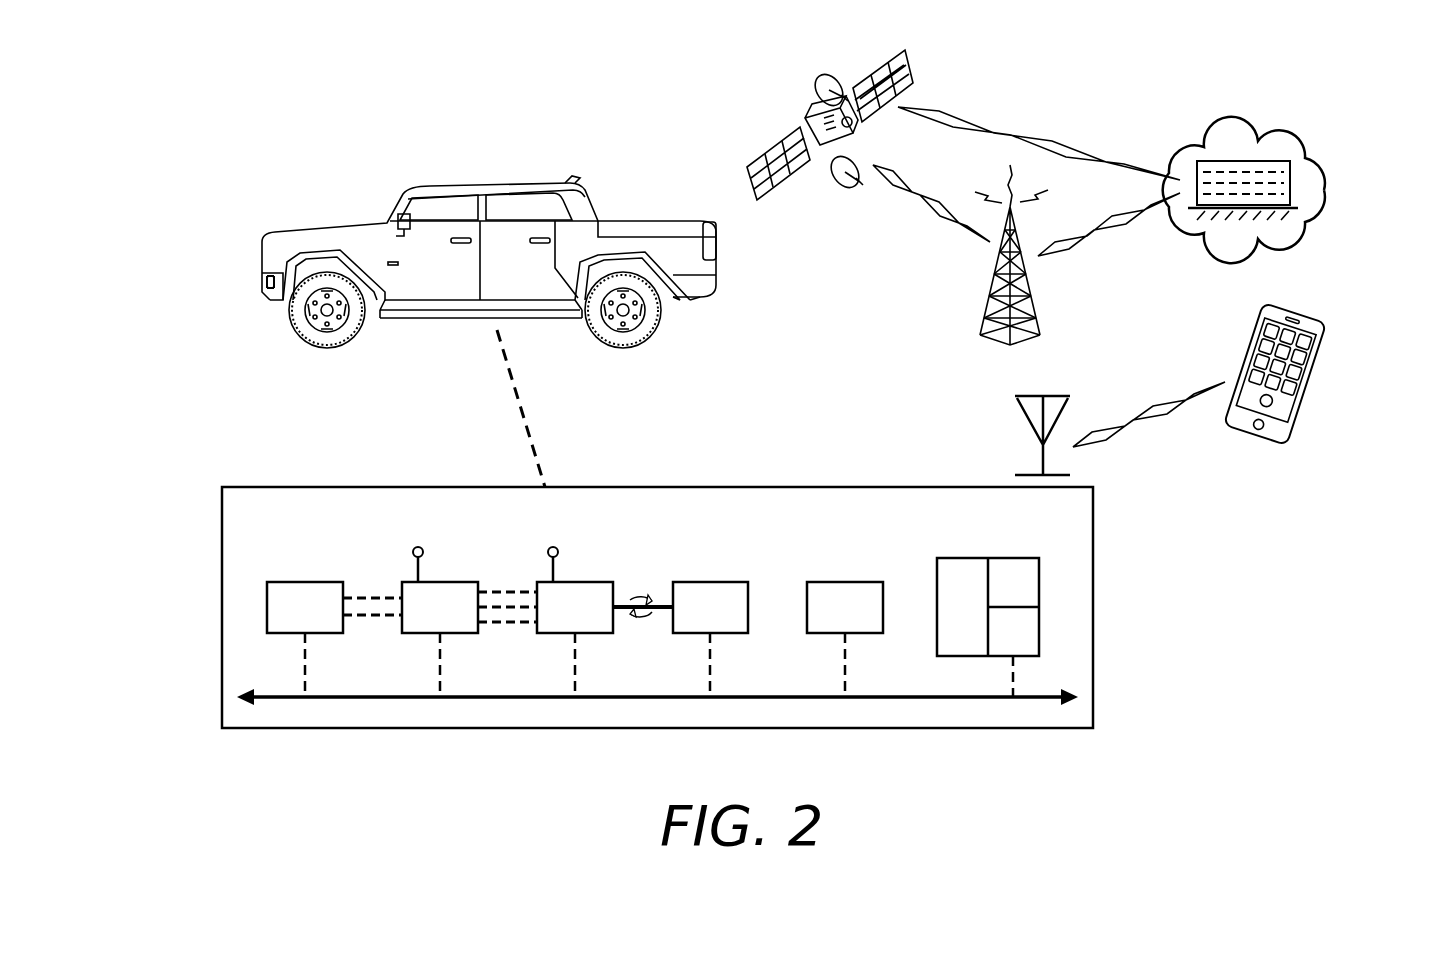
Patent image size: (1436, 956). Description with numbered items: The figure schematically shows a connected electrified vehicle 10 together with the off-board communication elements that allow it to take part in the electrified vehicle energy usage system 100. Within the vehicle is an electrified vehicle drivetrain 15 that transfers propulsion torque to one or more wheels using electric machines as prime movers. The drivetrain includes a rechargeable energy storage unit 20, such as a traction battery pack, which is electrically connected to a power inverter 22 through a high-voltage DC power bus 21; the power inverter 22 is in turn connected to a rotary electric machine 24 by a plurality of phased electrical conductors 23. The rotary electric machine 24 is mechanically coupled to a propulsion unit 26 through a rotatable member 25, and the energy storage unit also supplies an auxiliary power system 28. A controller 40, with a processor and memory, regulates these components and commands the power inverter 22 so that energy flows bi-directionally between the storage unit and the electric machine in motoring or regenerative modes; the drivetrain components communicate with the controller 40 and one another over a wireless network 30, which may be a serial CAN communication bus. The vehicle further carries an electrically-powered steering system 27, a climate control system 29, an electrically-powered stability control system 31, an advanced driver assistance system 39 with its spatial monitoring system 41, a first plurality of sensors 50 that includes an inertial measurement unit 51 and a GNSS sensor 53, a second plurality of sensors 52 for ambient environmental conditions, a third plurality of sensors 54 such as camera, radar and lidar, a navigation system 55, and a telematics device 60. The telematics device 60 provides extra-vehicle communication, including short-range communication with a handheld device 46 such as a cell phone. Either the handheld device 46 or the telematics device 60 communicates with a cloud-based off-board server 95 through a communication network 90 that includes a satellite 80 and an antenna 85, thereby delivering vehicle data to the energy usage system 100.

The electrified vehicle 10 is at (286, 207).
The electrified vehicle drivetrain 15 is at (283, 483).
The rechargeable energy storage unit 20 is at (307, 582).
The high-voltage DC power bus 21 is at (387, 585).
The power inverter 22 is at (440, 582).
The phased electrical conductors 23 is at (524, 585).
The rotary electric machine 24 is at (575, 582).
The rotatable member 25 is at (657, 585).
The propulsion unit 26 is at (710, 582).
The auxiliary power system 28 is at (845, 582).
The wireless network 30 is at (375, 700).
The controller 40 is at (995, 558).
The handheld device 46 is at (1313, 370).
The satellite 80 is at (846, 185).
The antenna 85 is at (1045, 292).
The communication network 90 is at (1032, 170).
The off-board server 95 is at (1297, 174).
The electrified vehicle energy usage system 100 is at (1243, 190).
The electrically-powered steering system 27 is at (92, 482).
The climate control system 29 is at (177, 222).
The electrically-powered stability control system 31 is at (177, 236).
The advanced driver assistance system 39 is at (177, 250).
The spatial monitoring system 41 is at (176, 264).
The first plurality of sensors 50 is at (177, 283).
The inertial measurement unit 51 is at (177, 301).
The second plurality of sensors 52 is at (177, 315).
The GNSS sensor 53 is at (177, 329).
The third plurality of sensors 54 is at (177, 343).
The navigation system 55 is at (177, 357).
The telematics device 60 is at (177, 371).